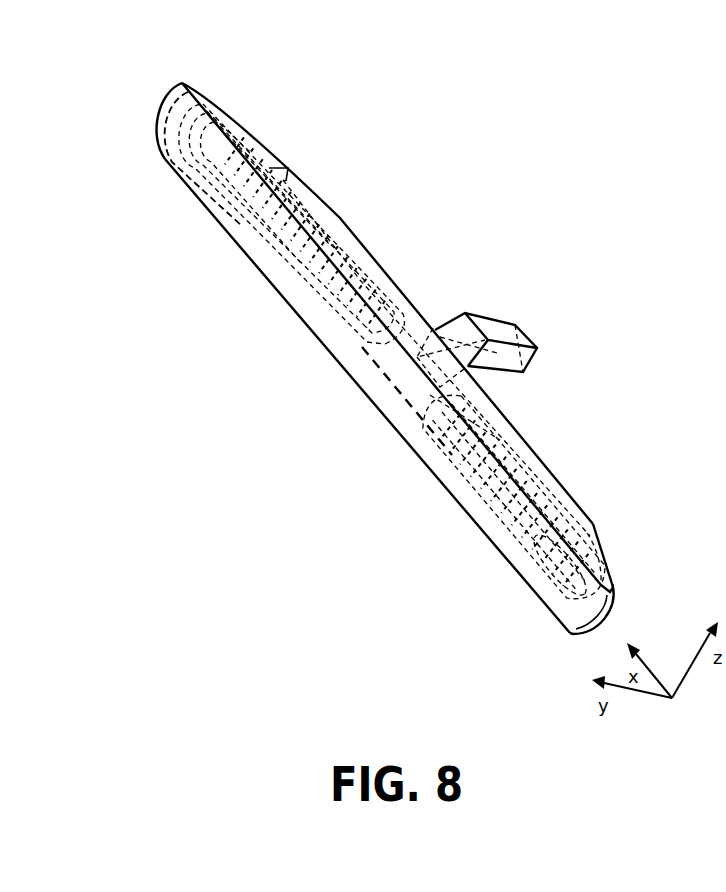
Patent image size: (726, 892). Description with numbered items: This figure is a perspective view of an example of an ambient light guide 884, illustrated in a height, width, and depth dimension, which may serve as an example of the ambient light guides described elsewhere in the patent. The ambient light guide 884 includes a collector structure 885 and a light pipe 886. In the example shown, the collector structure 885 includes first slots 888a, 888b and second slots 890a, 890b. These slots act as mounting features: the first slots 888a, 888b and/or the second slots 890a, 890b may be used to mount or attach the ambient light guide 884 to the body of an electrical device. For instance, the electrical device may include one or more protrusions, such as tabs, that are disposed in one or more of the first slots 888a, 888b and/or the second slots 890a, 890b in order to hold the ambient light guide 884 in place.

The ambient light guide 884 is at (117, 96).
The collector structure 885 is at (389, 278).
The light pipe 886 is at (490, 316).
The first slot 888a is at (264, 273).
The first slot 888b is at (503, 553).
The second slot 890a is at (269, 168).
The second slot 890b is at (520, 458).